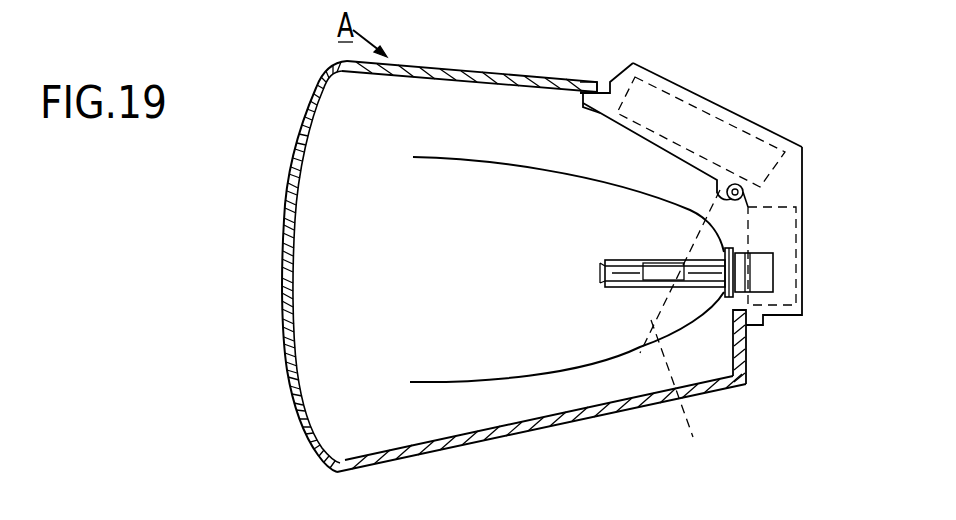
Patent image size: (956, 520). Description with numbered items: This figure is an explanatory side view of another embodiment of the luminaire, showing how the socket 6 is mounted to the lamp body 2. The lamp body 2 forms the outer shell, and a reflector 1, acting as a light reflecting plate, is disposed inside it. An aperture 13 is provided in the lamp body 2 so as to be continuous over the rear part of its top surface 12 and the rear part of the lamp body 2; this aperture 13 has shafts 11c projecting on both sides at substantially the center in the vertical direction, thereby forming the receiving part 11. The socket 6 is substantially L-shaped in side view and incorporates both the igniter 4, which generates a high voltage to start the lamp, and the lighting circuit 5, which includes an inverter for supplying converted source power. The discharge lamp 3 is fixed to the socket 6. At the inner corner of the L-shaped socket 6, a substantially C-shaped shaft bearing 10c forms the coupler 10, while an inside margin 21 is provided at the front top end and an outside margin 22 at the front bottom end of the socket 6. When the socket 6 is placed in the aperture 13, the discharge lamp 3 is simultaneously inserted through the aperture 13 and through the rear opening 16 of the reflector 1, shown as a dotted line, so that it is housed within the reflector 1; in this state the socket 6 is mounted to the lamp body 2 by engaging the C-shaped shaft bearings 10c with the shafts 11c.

The reflector 1 is at (445, 158).
The lamp body 2 is at (440, 74).
The discharge lamp 3 is at (613, 258).
The igniter 4 is at (800, 280).
The lighting circuit 5 is at (723, 122).
The socket 6 is at (790, 187).
The coupler 10 is at (727, 180).
The shaft bearing 10c is at (715, 183).
The receiving part 11 is at (745, 183).
The shaft 11c is at (728, 196).
The top surface 12 is at (570, 80).
The aperture 13 is at (611, 80).
The rear opening 16 is at (679, 399).
The inside margin 21 is at (588, 105).
The outside margin 22 is at (755, 323).